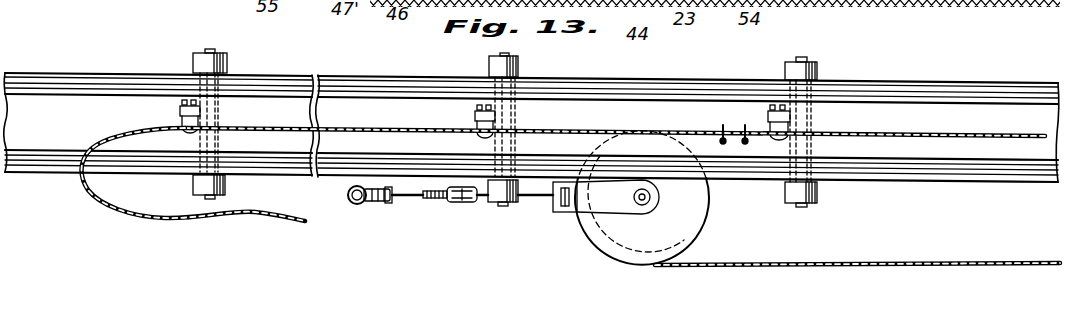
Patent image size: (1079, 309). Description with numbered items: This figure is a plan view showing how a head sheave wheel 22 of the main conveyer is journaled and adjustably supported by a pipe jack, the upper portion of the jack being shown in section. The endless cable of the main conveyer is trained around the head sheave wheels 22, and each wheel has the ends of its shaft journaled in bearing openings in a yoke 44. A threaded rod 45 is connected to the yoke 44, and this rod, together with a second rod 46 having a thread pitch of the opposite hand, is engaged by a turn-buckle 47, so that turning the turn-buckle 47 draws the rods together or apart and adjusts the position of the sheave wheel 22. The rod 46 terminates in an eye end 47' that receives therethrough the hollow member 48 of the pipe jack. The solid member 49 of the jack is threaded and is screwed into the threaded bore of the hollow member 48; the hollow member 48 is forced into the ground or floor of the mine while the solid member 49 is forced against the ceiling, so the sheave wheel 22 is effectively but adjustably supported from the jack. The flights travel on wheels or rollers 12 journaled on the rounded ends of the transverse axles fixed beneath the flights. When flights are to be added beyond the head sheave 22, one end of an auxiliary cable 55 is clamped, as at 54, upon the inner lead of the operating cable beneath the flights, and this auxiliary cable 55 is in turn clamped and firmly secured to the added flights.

The wheels or rollers 12 is at (520, 66).
The auxiliary cable 55 is at (394, 126).
The clamp 54 is at (725, 132).
The hollow member 48 is at (347, 193).
The eye end 47' is at (365, 212).
The solid member 49 is at (389, 204).
The second rod 46 is at (412, 200).
The turn-buckle 47 is at (467, 211).
The threaded rod 45 is at (533, 198).
The yoke 44 is at (567, 213).
The head sheave wheels 22 is at (642, 198).